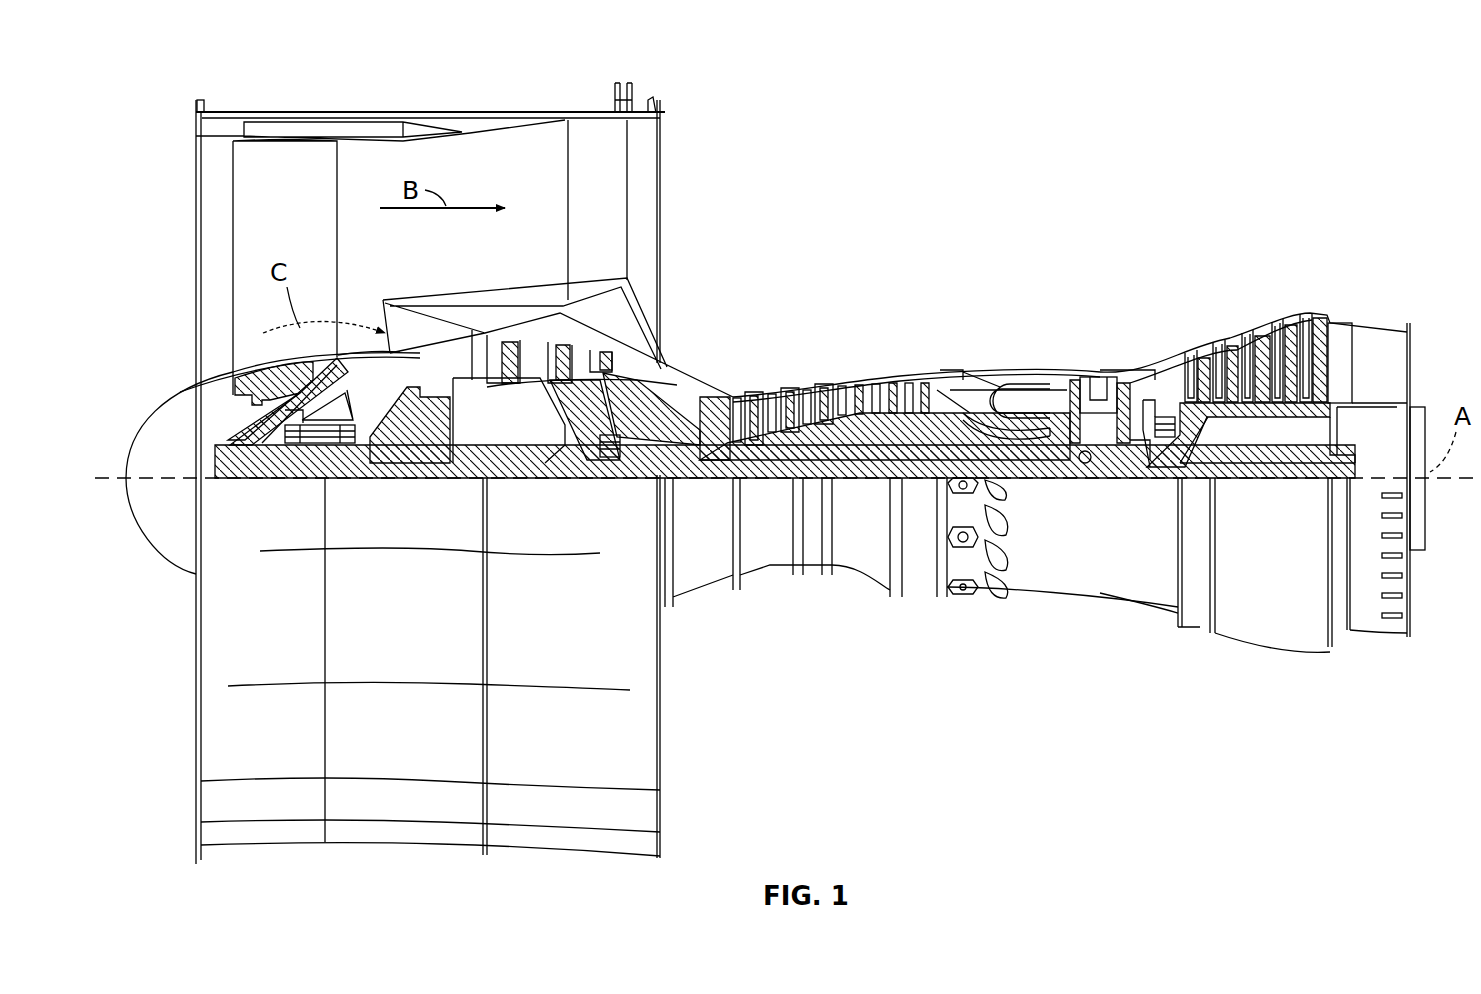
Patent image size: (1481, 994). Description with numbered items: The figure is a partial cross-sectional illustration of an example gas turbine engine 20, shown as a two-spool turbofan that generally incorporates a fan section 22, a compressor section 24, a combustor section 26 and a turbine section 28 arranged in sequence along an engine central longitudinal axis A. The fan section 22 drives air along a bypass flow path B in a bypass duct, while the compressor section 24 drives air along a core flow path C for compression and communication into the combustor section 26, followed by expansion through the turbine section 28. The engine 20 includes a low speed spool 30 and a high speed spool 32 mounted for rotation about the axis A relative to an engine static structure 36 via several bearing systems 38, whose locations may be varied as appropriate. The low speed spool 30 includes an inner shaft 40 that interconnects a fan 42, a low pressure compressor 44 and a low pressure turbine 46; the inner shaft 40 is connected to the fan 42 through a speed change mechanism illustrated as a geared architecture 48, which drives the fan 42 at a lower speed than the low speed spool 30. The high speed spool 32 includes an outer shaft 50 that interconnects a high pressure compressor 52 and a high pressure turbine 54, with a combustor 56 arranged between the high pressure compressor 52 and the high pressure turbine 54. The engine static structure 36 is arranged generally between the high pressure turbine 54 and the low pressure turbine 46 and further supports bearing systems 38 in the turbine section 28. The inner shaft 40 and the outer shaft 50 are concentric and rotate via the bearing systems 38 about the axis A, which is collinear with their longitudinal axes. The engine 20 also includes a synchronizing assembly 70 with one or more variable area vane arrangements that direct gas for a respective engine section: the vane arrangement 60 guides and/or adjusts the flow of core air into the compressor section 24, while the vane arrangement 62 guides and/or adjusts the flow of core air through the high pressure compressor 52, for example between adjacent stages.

The gas turbine engine 20 is at (1275, 160).
The fan section 22 is at (386, 96).
The compressor section 24 is at (886, 312).
The combustor section 26 is at (1020, 312).
The turbine section 28 is at (1160, 312).
The low speed spool 30 is at (868, 482).
The high speed spool 32 is at (957, 400).
The engine static structure 36 is at (918, 596).
The bearing systems 38 is at (287, 448).
The inner shaft 40 is at (690, 468).
The fan 42 is at (285, 268).
The low pressure compressor 44 is at (575, 347).
The low pressure turbine 46 is at (1260, 337).
The geared architecture 48 is at (435, 456).
The outer shaft 50 is at (1084, 463).
The high pressure compressor 52 is at (830, 447).
The high pressure turbine 54 is at (1097, 372).
The combustor 56 is at (1027, 398).
The vane arrangement 60 is at (750, 395).
The vane arrangement 62 is at (773, 397).
The synchronizing assembly 70 is at (353, 366).